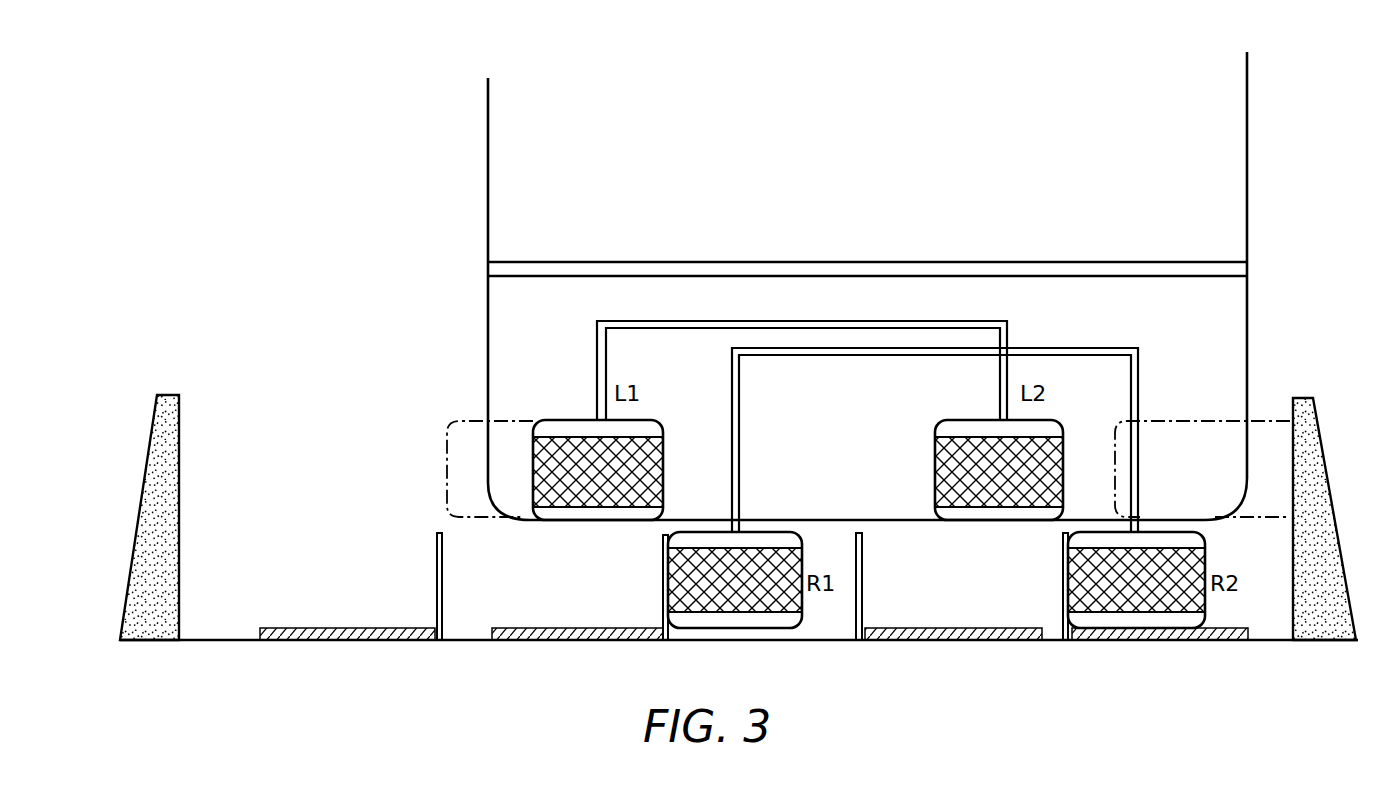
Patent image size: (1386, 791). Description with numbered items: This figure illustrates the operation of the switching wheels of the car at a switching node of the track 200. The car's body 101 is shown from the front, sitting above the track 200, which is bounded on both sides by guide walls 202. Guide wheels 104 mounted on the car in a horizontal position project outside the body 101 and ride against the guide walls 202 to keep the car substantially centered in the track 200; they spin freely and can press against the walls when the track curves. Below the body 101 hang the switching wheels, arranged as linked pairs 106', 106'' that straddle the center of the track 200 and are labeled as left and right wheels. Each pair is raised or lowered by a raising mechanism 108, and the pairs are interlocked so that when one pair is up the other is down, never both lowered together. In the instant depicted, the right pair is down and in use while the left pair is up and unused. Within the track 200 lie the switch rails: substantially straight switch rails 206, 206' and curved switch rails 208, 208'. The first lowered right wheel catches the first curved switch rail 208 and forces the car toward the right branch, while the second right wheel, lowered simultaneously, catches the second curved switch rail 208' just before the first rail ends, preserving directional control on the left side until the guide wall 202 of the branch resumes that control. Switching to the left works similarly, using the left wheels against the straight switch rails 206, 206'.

The body 101 is at (513, 176).
The raising mechanism 108 is at (780, 348).
The guide wheel 104 is at (448, 433).
The linked pair of switching wheels 106' is at (774, 450).
The linked pair of switching wheels 106'' is at (1037, 692).
The track 200 is at (462, 650).
The guide walls 202 is at (179, 478).
The substantially straight switch rail 206 is at (389, 586).
The substantially straight switch rail 206' is at (914, 586).
The curved switch rail 208 is at (601, 587).
The curved switch rail 208' is at (1013, 586).